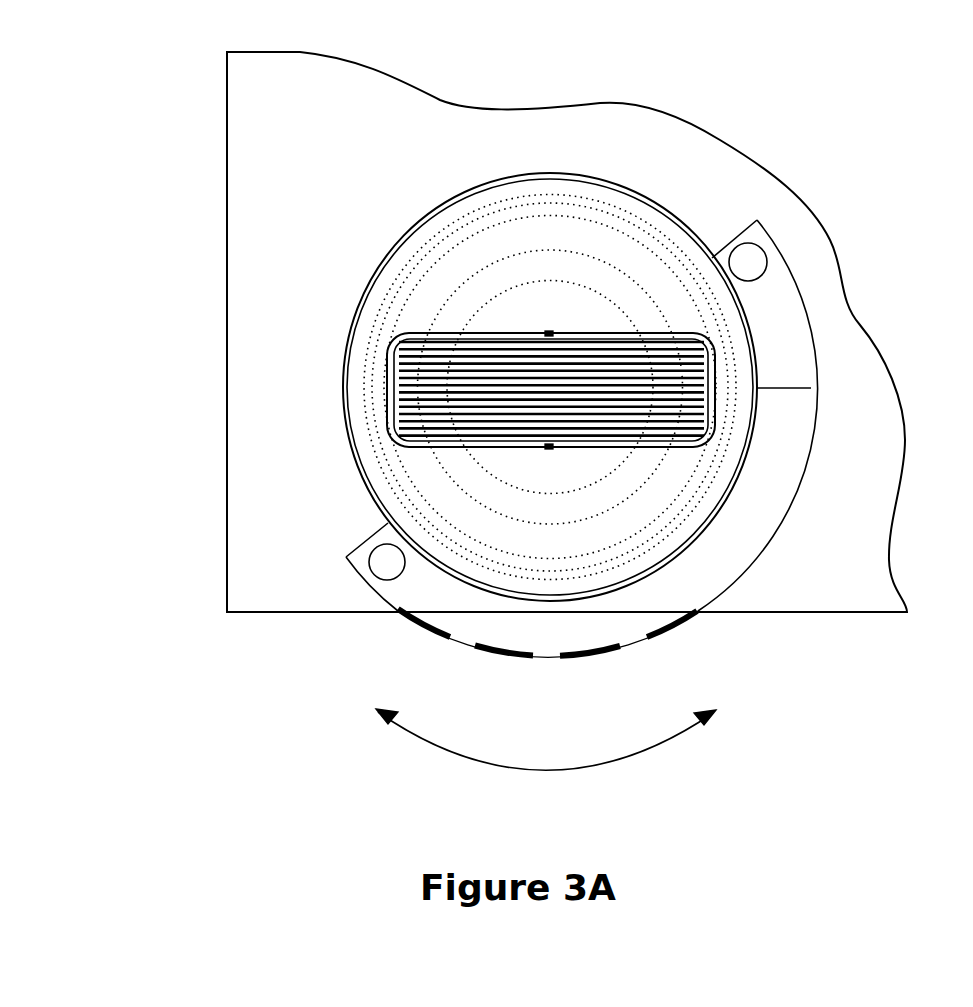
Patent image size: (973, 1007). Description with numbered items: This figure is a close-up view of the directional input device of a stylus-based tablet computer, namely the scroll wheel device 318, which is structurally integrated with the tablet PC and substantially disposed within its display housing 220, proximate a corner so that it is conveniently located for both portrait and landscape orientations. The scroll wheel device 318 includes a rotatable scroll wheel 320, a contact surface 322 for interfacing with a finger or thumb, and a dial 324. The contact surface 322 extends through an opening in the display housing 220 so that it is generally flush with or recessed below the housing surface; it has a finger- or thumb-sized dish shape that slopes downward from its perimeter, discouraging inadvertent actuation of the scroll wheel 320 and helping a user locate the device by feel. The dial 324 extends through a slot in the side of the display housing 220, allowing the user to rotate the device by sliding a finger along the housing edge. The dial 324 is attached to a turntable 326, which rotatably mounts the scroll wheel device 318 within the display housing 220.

The display housing 220 is at (288, 132).
The scroll wheel device 318 is at (665, 175).
The rotatable scroll wheel 320 is at (537, 393).
The contact surface 322 is at (390, 490).
The dial 324 is at (470, 645).
The turntable 326 is at (388, 333).